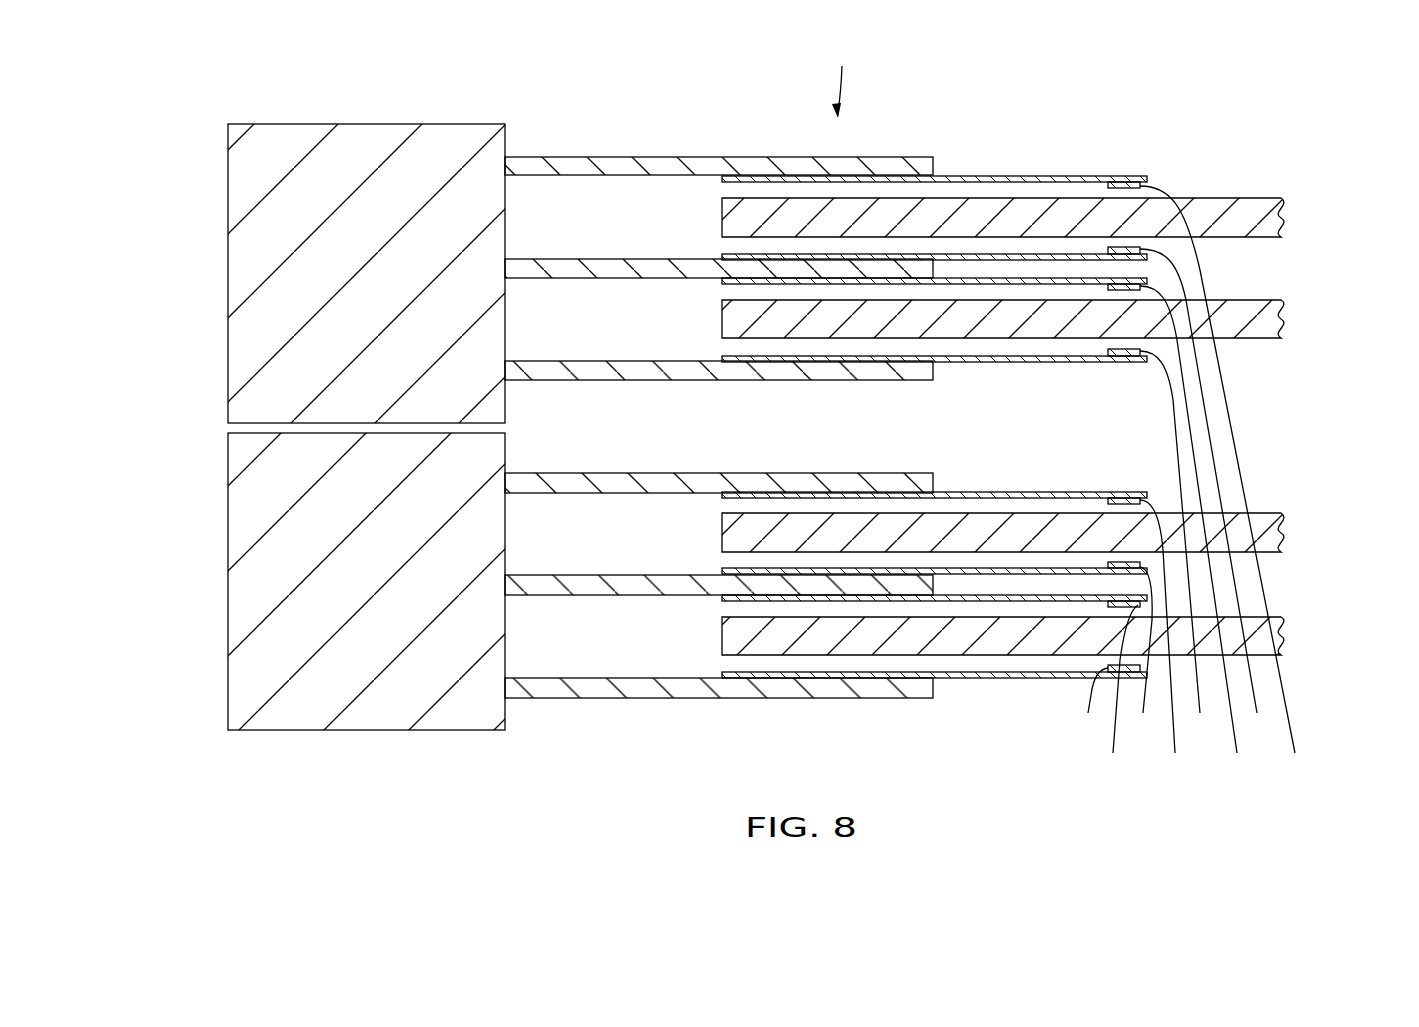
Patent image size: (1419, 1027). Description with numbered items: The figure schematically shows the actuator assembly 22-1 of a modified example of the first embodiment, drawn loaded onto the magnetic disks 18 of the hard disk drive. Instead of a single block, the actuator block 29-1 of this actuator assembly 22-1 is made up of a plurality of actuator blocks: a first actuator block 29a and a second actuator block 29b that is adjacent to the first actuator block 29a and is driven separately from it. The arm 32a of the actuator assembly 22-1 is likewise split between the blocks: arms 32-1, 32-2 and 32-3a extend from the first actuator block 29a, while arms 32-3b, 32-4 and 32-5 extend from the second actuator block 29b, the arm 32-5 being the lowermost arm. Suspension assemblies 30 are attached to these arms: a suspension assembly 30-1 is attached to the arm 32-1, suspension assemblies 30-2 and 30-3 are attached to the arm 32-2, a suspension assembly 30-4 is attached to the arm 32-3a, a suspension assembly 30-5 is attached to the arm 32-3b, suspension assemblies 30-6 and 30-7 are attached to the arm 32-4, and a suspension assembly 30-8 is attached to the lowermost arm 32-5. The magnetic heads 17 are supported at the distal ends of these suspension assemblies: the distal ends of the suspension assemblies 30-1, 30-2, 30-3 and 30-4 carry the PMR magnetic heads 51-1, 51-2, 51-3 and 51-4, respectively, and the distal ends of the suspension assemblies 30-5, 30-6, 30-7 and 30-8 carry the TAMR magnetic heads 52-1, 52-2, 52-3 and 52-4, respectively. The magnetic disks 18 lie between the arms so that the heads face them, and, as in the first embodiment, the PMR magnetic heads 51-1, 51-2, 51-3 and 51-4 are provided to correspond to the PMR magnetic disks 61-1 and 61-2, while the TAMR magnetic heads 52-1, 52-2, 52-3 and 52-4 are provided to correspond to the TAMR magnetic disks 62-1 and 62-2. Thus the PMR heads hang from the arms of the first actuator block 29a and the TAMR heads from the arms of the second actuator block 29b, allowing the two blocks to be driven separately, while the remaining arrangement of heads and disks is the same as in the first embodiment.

The actuator block 29-1 is at (293, 427).
The first actuator block 29a is at (231, 252).
The second actuator block 29b is at (331, 581).
The arm 32a is at (715, 360).
The arm 32-1 is at (533, 157).
The arm 32-2 is at (577, 259).
The arm 32-3a is at (608, 361).
The arm 32-3b is at (627, 473).
The arm 32-4 is at (641, 575).
The lowermost arm 32-5 is at (650, 678).
The actuator assembly 22-1 is at (842, 78).
The conductor group 30 is at (935, 348).
The suspension assembly 30-1 is at (958, 177).
The suspension assembly 30-2 is at (977, 254).
The suspension assembly 30-3 is at (990, 279).
The suspension assembly 30-4 is at (995, 356).
The suspension assembly 30-5 is at (1010, 492).
The suspension assembly 30-6 is at (1022, 568).
The suspension assembly 30-7 is at (1035, 597).
The suspension assembly 30-8 is at (1042, 672).
The magnetic disks 18 is at (1070, 426).
The PMR magnetic disk 61-1 is at (1284, 218).
The PMR magnetic disk 61-2 is at (1284, 321).
The TAMR magnetic disk 62-1 is at (1284, 531).
The TAMR magnetic disk 62-2 is at (1043, 636).
The lead wire group 17 is at (1187, 508).
The PMR magnetic head 51-1 is at (1214, 483).
The PMR magnetic head 51-2 is at (1195, 497).
The PMR magnetic head 51-3 is at (1184, 534).
The PMR magnetic head 51-4 is at (1166, 548).
The TAMR magnetic head 52-1 is at (1153, 641).
The TAMR magnetic head 52-2 is at (1139, 655).
The TAMR magnetic head 52-3 is at (1115, 692).
The TAMR magnetic head 52-4 is at (1101, 706).